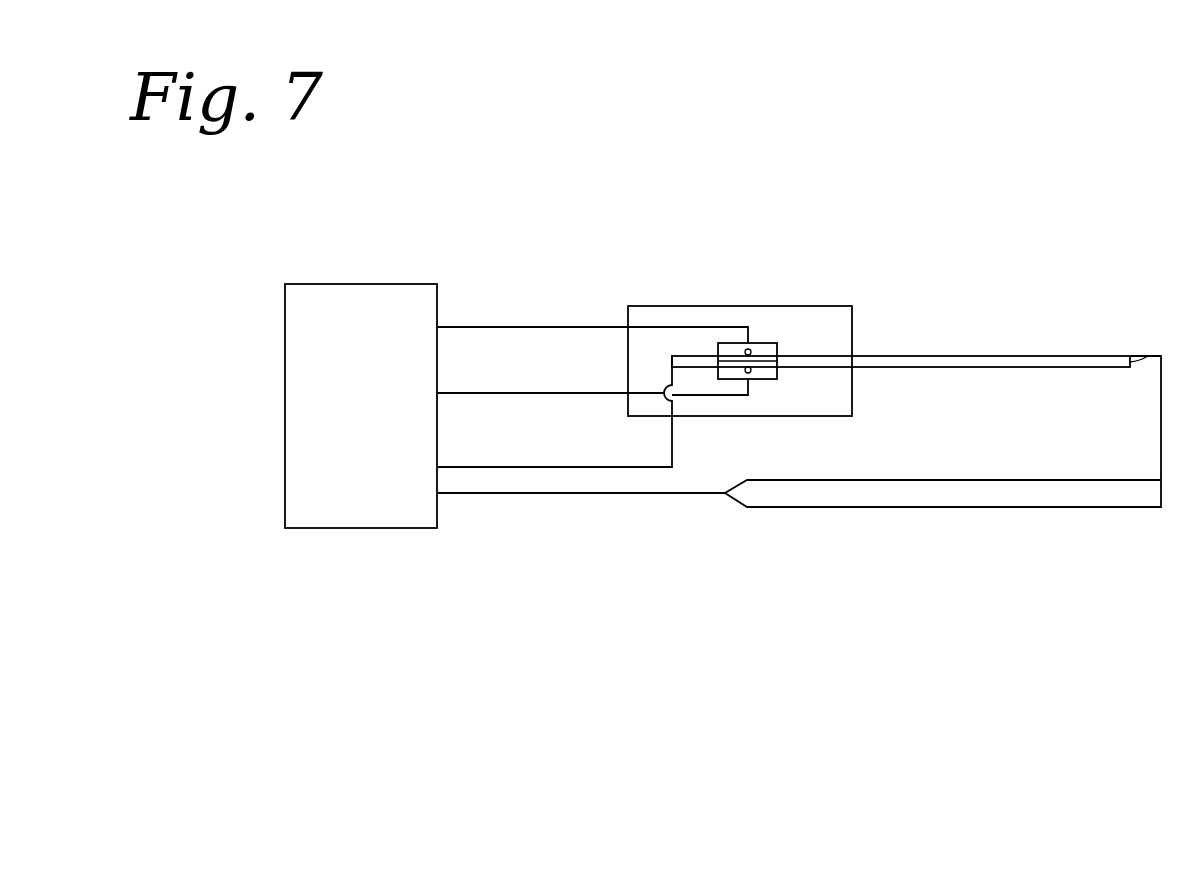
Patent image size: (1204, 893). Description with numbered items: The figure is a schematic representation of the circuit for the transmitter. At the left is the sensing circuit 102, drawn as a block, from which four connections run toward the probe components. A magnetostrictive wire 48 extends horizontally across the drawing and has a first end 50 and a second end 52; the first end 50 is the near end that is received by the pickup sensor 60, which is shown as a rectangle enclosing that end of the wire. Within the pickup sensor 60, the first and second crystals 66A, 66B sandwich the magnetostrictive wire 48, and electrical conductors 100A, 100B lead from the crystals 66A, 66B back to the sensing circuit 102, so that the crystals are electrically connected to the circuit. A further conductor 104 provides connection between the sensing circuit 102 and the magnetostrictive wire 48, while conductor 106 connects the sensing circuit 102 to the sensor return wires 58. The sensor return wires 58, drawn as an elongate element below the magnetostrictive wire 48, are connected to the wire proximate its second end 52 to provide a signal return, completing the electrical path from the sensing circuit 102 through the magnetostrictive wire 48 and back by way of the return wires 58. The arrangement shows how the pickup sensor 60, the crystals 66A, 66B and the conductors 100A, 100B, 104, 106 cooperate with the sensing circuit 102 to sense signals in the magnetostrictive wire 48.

The sensing circuit 102 is at (388, 283).
The first electrical conductor 100A is at (497, 395).
The second electrical conductor 100B is at (522, 327).
The conductor 104 is at (672, 433).
The conductor 106 is at (497, 494).
The first end of magnetostrictive wire 50 is at (672, 355).
The pickup sensor 60 is at (870, 328).
The first crystal 66A is at (777, 376).
The second crystal 66B is at (763, 350).
The magnetostrictive wire 48 is at (972, 356).
The second end of magnetostrictive wire 52 is at (1145, 357).
The sensor return wires 58 is at (1013, 480).